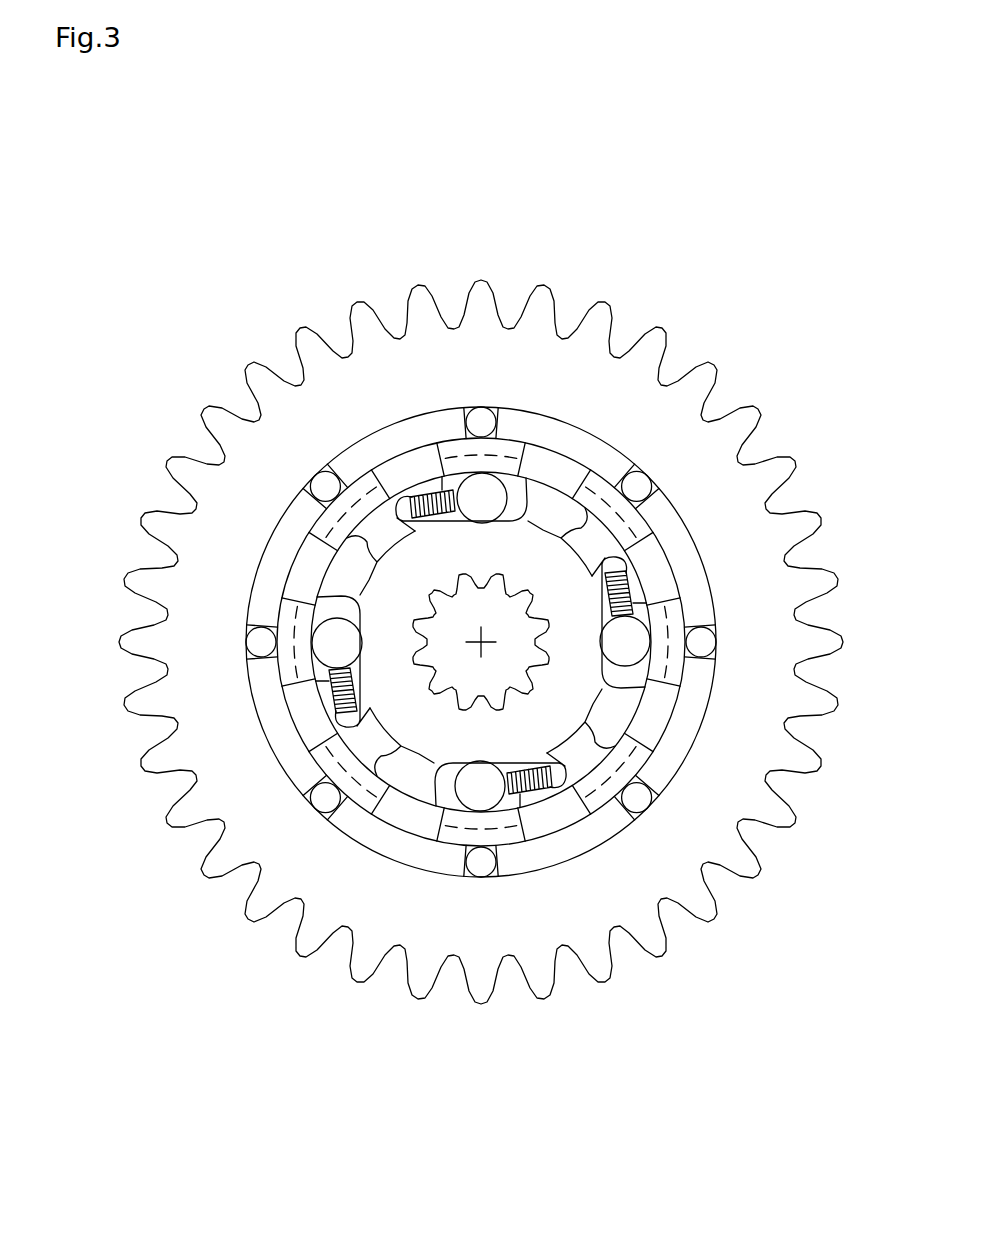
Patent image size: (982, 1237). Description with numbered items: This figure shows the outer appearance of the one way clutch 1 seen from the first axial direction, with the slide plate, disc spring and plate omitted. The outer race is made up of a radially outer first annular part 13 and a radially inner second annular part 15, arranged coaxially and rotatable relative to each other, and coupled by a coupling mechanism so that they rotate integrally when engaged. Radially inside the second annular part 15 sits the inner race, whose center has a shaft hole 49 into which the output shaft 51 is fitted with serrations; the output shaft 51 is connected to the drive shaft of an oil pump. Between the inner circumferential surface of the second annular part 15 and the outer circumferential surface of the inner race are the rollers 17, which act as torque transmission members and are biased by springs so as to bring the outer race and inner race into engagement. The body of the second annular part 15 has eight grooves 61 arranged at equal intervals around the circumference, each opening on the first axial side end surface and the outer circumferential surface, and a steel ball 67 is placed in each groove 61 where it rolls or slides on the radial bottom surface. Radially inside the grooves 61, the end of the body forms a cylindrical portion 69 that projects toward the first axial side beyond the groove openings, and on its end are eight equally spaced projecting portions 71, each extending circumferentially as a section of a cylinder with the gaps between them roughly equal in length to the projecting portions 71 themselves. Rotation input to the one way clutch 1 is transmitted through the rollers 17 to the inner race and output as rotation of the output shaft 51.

The one way clutch 1 is at (712, 226).
The first annular part 13 is at (297, 383).
The second annular part 15 is at (360, 453).
The rollers 17 is at (483, 512).
The shaft hole 49 is at (447, 585).
The output shaft 51 is at (460, 670).
The grooves 61 is at (492, 428).
The ball 67 is at (650, 475).
The cylindrical portion 69 is at (403, 462).
The projecting portions 71 is at (455, 452).